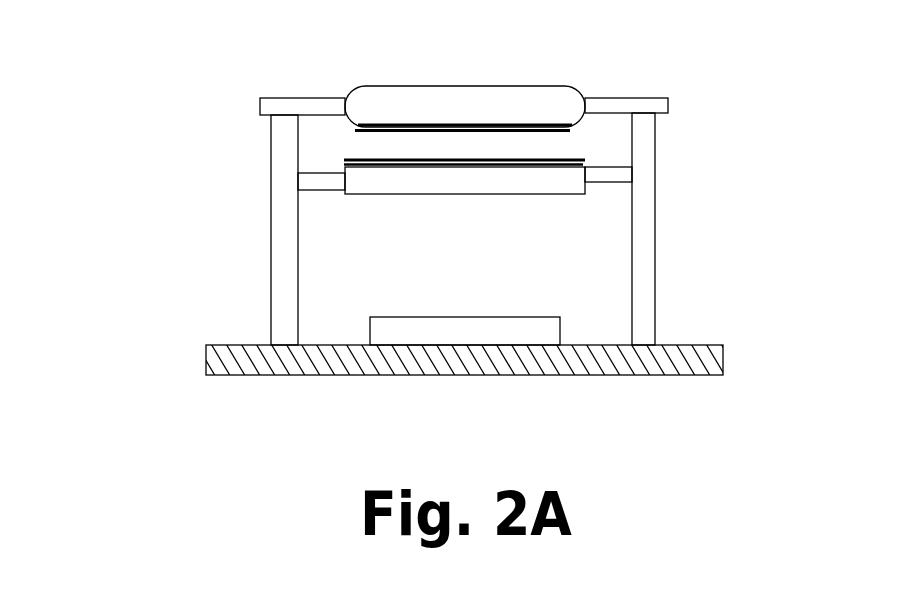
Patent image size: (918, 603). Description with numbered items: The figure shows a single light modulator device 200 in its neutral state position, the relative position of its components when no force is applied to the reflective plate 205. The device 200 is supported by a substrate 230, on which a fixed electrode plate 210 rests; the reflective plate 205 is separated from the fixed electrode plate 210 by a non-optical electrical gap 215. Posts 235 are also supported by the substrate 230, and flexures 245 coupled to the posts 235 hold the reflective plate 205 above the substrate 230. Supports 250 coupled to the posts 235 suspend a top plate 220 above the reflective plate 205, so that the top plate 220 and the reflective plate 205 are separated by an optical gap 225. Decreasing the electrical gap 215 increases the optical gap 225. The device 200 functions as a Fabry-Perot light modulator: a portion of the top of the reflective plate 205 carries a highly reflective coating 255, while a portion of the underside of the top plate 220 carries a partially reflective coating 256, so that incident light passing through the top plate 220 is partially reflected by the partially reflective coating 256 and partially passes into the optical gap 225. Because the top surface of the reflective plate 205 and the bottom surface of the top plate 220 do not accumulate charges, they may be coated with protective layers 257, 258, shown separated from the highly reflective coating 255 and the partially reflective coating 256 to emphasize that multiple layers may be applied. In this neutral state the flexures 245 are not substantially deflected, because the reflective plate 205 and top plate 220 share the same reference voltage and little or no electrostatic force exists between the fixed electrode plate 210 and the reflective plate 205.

The light modulator device 200 is at (150, 95).
The reflective plate 205 is at (484, 195).
The fixed electrode plate 210 is at (487, 344).
The electrical gap 215 is at (542, 270).
The top plate 220 is at (484, 117).
The optical gap 225 is at (564, 147).
The substrate 230 is at (463, 356).
The posts 235 is at (271, 230).
The flexures 245 is at (325, 192).
The supports 250 is at (321, 98).
The highly reflective coating 255 is at (518, 167).
The partially reflective coating 256 is at (508, 124).
The protective layer 257 is at (390, 161).
The protective layer 258 is at (381, 131).